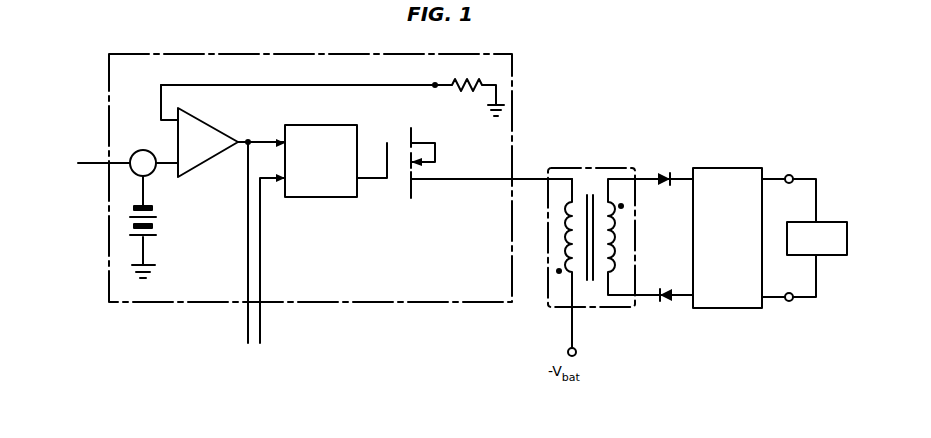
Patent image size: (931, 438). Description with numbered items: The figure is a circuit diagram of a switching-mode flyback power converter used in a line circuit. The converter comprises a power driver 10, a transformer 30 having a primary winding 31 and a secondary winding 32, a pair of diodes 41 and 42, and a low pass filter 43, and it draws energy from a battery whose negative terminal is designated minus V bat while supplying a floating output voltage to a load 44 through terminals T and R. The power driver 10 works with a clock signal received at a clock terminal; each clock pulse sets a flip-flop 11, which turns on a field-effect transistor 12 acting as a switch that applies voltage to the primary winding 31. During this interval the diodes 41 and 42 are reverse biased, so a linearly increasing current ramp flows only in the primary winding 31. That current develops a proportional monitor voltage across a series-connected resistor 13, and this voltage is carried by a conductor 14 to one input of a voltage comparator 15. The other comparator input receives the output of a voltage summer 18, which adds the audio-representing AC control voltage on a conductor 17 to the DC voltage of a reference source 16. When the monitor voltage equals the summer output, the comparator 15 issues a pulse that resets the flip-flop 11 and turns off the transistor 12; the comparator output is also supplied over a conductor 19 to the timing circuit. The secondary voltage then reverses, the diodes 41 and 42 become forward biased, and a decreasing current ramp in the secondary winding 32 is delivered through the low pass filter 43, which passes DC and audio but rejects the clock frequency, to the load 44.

The power driver 10 is at (318, 54).
The flip-flop 11 is at (322, 125).
The field-effect transistor 12 is at (397, 177).
The series-connected resistor 13 is at (465, 96).
The conductor 14 is at (334, 85).
The voltage comparator 15 is at (207, 121).
The reference source 16 is at (156, 221).
The conductor 17 is at (122, 158).
The voltage summer 18 is at (152, 172).
The conductor 19 is at (248, 329).
The transformer 30 is at (605, 242).
The primary winding 31 is at (563, 238).
The secondary winding 32 is at (618, 238).
The diode 41 is at (663, 174).
The diode 42 is at (662, 289).
The low pass filter 43 is at (729, 168).
The load 44 is at (797, 222).